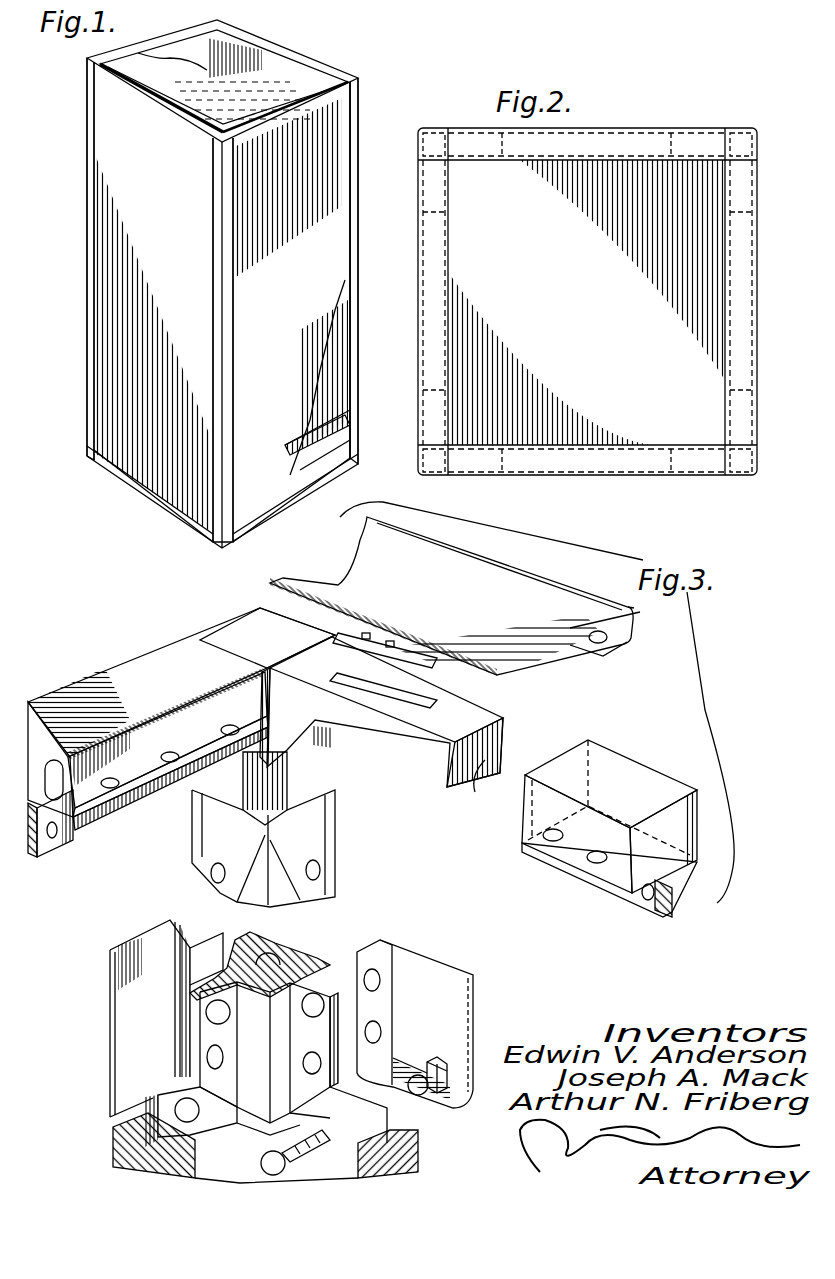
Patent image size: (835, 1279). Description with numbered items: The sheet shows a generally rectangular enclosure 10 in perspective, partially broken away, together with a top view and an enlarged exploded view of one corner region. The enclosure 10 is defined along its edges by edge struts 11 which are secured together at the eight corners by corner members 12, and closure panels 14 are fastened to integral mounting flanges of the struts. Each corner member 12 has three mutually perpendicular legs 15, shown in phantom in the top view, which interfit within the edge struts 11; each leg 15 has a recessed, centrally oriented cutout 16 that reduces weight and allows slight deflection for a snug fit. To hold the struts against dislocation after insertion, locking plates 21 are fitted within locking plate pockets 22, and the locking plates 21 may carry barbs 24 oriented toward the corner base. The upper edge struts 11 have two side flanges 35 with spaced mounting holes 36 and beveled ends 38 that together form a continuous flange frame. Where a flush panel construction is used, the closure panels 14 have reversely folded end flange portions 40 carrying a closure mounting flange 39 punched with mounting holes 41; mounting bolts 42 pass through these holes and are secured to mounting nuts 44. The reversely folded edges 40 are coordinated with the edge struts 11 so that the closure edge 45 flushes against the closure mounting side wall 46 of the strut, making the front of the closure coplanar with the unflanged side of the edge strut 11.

In FIG. 1, the enclosure 10 is at (353, 66).
In FIG. 1, the edge strut 11 is at (312, 66).
In FIG. 2, the edge strut 11 is at (600, 148).
In FIG. 3, the edge strut 11 is at (93, 692).
In FIG. 1, the corner member 12 is at (90, 62).
In FIG. 2, the corner member 12 is at (740, 135).
In FIG. 3, the corner member 12 is at (234, 638).
In FIG. 1, the closure panel 14 is at (176, 50).
In FIG. 2, the closure panel 14 is at (695, 328).
In FIG. 3, the closure panel 14 is at (520, 617).
In FIG. 2, the leg 15 is at (462, 140).
In FIG. 3, the leg 15 is at (485, 722).
In FIG. 3, the cutout 16 is at (275, 790).
In FIG. 3, the locking plate 21 is at (410, 642).
In FIG. 3, the locking plate pocket 22 is at (422, 706).
In FIG. 3, the barb 24 is at (370, 633).
In FIG. 1, the side flange 35 is at (232, 46).
In FIG. 3, the side flange 35 is at (145, 778).
In FIG. 3, the mounting hole 36 is at (125, 745).
In FIG. 3, the beveled end 38 is at (257, 717).
In FIG. 3, the closure mounting flange 39 is at (612, 645).
In FIG. 3, the reversely folded end flange portion 40 is at (640, 633).
In FIG. 3, the mounting hole 41 is at (372, 968).
In FIG. 3, the mounting bolt 42 is at (210, 1012).
In FIG. 3, the mounting nut 44 is at (437, 1064).
In FIG. 3, the closure edge 45 is at (634, 618).
In FIG. 3, the closure mounting side wall 46 is at (148, 730).